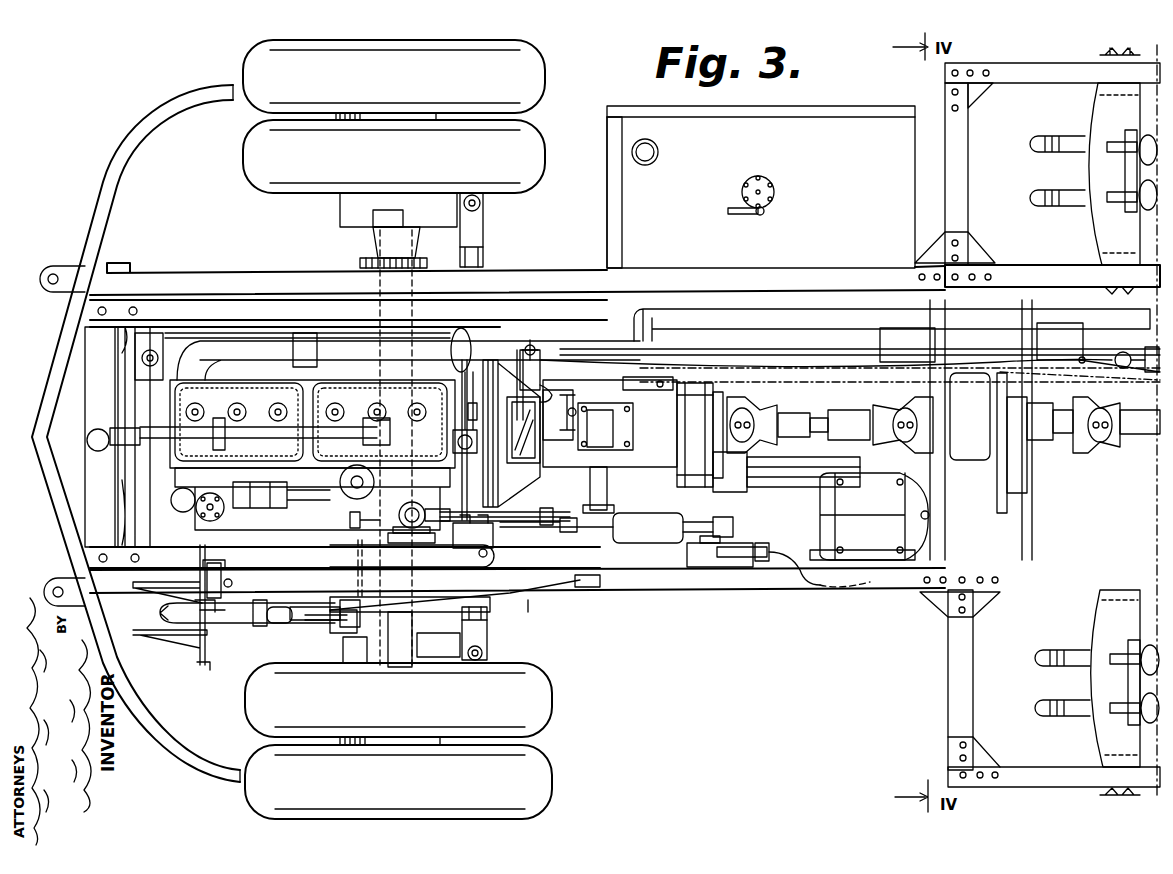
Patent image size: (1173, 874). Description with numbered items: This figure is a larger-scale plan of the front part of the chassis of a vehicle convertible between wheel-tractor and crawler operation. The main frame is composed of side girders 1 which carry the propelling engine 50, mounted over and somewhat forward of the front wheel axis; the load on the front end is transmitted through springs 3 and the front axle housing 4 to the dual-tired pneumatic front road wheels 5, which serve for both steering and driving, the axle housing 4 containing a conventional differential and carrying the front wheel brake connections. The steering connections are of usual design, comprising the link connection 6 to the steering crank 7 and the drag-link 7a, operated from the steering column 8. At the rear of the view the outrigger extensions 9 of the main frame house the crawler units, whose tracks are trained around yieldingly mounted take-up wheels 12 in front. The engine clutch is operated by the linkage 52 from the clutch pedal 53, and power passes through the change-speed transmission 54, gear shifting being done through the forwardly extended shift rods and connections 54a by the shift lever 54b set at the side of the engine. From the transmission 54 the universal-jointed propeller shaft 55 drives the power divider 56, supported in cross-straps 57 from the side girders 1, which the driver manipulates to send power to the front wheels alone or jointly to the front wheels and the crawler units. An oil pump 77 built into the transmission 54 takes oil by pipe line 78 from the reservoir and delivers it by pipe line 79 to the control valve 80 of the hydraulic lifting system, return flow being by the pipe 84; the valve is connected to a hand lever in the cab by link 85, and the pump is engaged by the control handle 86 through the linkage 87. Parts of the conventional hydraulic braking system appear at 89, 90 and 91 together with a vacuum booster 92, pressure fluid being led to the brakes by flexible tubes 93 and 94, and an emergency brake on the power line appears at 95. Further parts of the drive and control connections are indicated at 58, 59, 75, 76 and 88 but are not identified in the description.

The side girders 1 is at (272, 290).
The springs 3 is at (963, 695).
The front axle housing 4 is at (377, 338).
The front road wheels 5 is at (535, 770).
The link connection 6 is at (298, 618).
The steering crank 7 is at (347, 628).
The drag-link 7a is at (478, 250).
The steering column 8 is at (240, 615).
The outrigger extensions 9 is at (1025, 75).
The take-up wheels 12 is at (1043, 193).
The engine 50 is at (213, 400).
The clutch linkage 52 is at (370, 525).
The clutch pedal 53 is at (200, 665).
The change-speed transmission 54 is at (568, 410).
The shift rods and connections 54a is at (566, 527).
The shift lever 54b is at (412, 515).
The universal-jointed propeller shaft 55 is at (797, 423).
The power divider 56 is at (984, 494).
The cross-straps 57 is at (1027, 533).
The drive shaft 58 is at (777, 474).
The rear drive shaft 59 is at (1148, 442).
The clutch control rod 75 is at (572, 428).
The lever 76 is at (535, 387).
The oil pump 77 is at (648, 388).
The pipe line 78 is at (738, 292).
The pipe line 79 is at (1112, 393).
The control valve 80 is at (1152, 347).
The return pipe 84 is at (532, 345).
The link 85 is at (575, 338).
The control handle 86 is at (553, 393).
The linkage 87 is at (571, 416).
The linkage 88 is at (200, 565).
The hydraulic brake system part 89 is at (309, 617).
The hydraulic brake system part 90 is at (648, 547).
The hydraulic brake system part 91 is at (697, 568).
The vacuum booster 92 is at (862, 545).
The flexible tube 93 is at (735, 560).
The flexible tube 94 is at (785, 560).
The emergency brake 95 is at (708, 462).